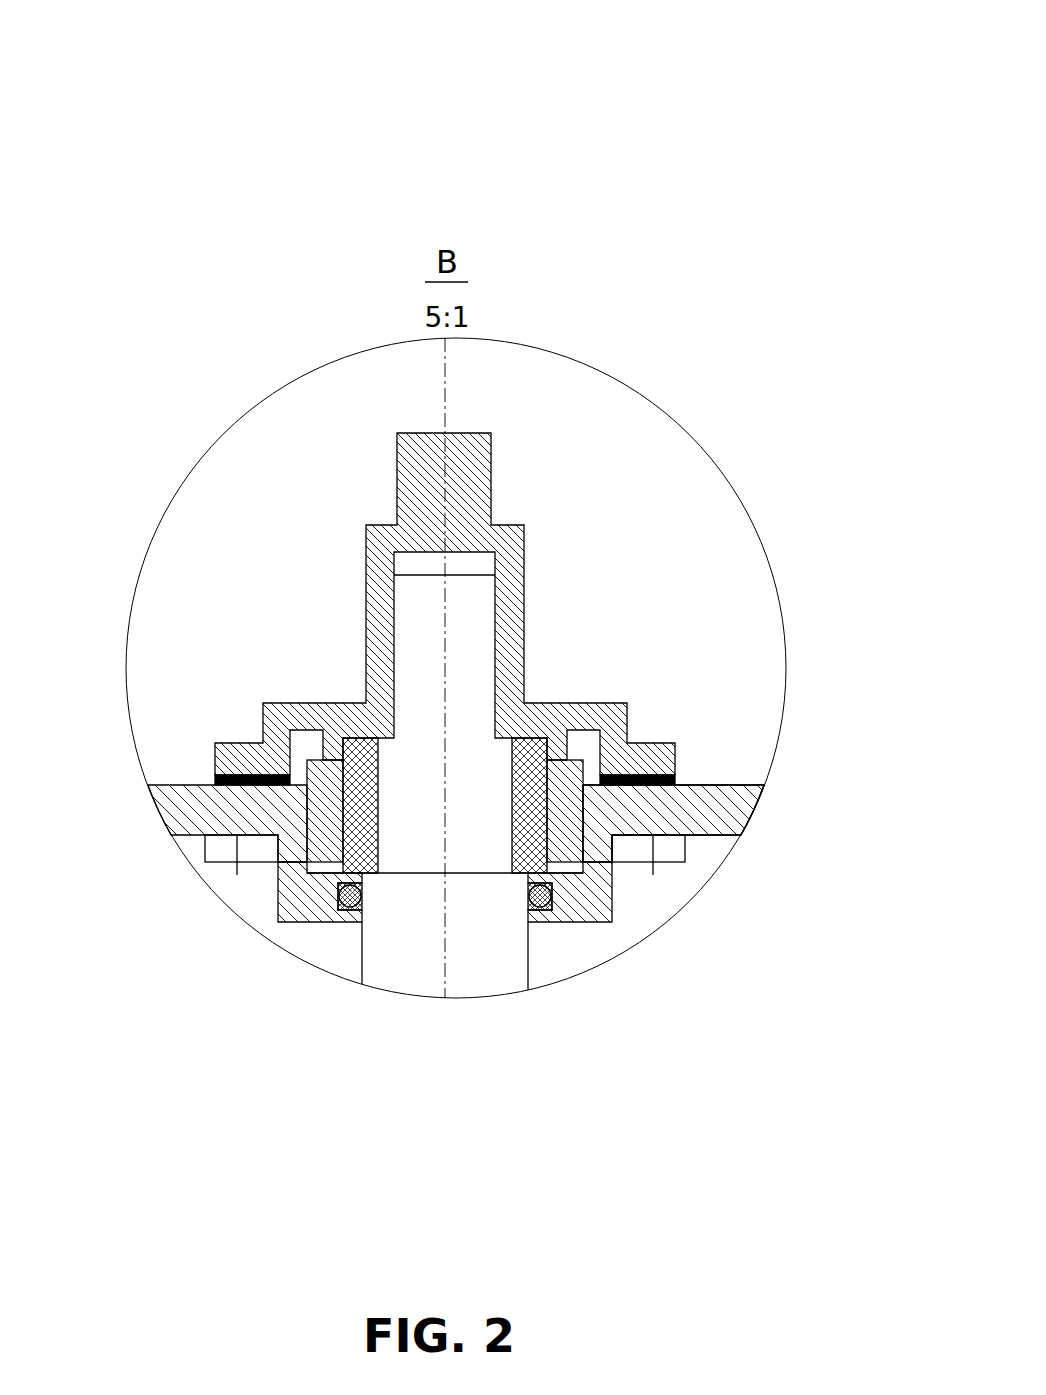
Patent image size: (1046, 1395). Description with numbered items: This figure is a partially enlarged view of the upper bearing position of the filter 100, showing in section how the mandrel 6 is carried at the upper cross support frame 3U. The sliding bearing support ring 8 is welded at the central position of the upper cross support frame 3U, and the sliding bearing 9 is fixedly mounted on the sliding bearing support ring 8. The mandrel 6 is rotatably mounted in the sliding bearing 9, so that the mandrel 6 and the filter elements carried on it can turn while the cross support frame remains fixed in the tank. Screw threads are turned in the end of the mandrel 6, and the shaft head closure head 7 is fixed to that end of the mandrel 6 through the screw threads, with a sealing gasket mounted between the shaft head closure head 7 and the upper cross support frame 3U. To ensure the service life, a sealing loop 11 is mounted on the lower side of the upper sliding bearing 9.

The filter 100 is at (787, 37).
The upper cross support frame 3U is at (737, 808).
The mandrel 6 is at (437, 722).
The shaft head closure head 7 is at (422, 527).
The sliding bearing support ring 8 is at (313, 812).
The sliding bearing 9 is at (741, 836).
The sealing loop 11 is at (612, 918).